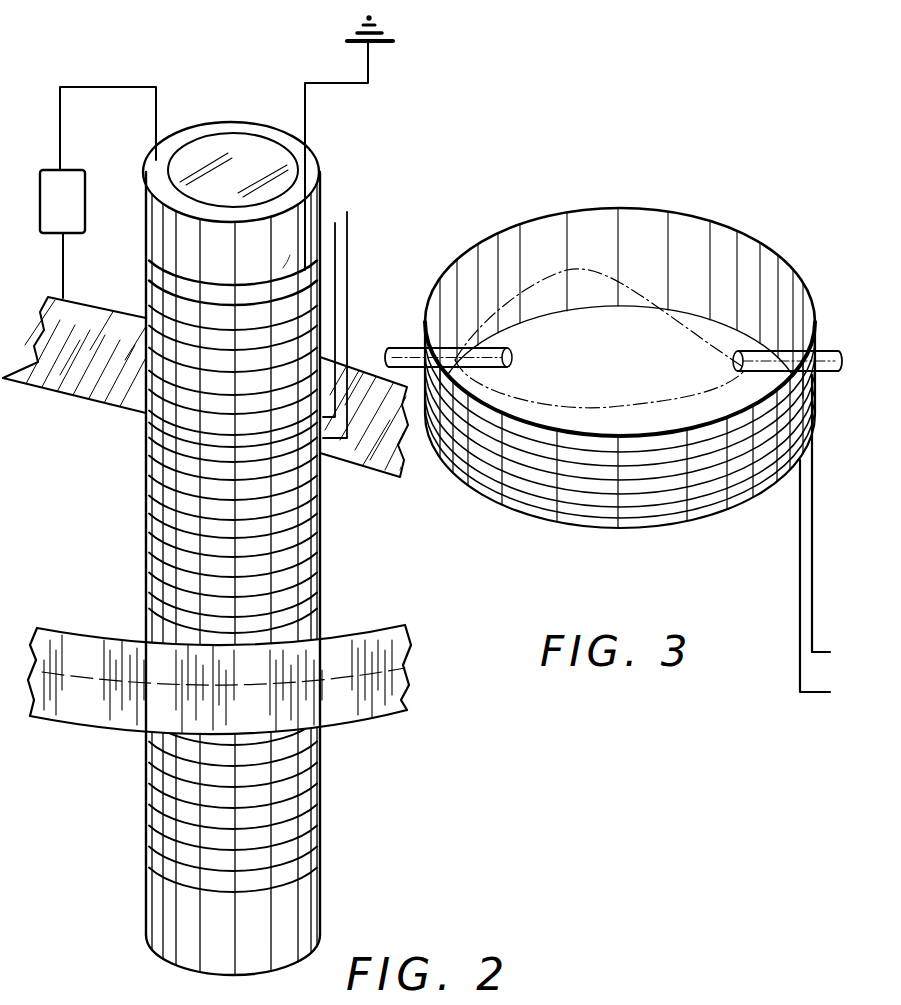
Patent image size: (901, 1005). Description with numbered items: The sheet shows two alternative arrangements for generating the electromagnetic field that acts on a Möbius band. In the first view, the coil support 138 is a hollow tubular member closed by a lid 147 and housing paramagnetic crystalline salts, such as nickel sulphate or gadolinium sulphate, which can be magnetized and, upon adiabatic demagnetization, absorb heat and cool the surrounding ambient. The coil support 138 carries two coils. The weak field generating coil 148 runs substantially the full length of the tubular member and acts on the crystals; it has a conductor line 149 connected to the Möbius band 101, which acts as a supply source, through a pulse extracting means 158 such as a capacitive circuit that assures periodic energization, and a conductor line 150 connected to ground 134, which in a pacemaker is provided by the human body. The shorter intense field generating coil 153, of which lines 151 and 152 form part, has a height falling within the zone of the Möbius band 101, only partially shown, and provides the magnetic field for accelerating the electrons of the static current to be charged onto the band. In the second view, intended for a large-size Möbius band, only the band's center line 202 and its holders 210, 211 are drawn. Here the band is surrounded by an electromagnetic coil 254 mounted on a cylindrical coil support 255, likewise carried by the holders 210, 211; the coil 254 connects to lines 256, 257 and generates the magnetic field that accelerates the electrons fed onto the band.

In FIG. 2, the Möbius band 101 is at (80, 295).
In FIG. 2, the ground 134 is at (393, 43).
In FIG. 2, the coil support 138 is at (308, 905).
In FIG. 2, the lid 147 is at (238, 147).
In FIG. 2, the weak field generating coil 148 is at (283, 270).
In FIG. 2, the conductor line 149 is at (156, 110).
In FIG. 2, the conductor line 150 is at (305, 112).
In FIG. 2, the line 151 is at (335, 240).
In FIG. 2, the line 152 is at (347, 262).
In FIG. 2, the intense field generating coil 153 is at (318, 512).
In FIG. 2, the pulse extracting means 158 is at (62, 234).
In FIG. 3, the center line 202 is at (647, 300).
In FIG. 3, the holder 210 is at (397, 345).
In FIG. 3, the holder 211 is at (823, 349).
In FIG. 3, the electromagnetic coil 254 is at (523, 498).
In FIG. 3, the cylindrical coil support 255 is at (470, 480).
In FIG. 3, the line 256 is at (798, 537).
In FIG. 3, the line 257 is at (812, 600).